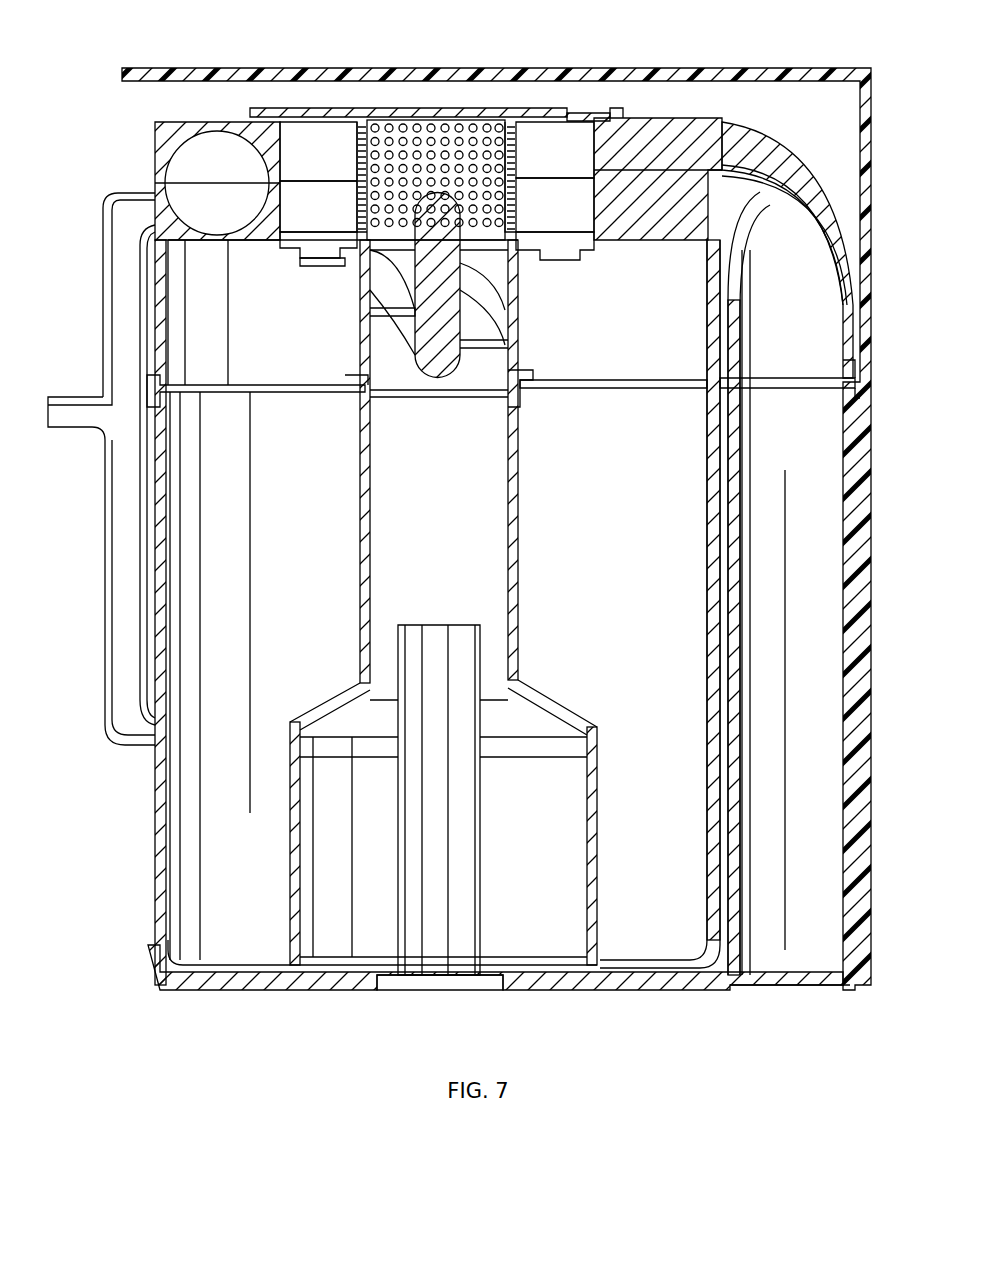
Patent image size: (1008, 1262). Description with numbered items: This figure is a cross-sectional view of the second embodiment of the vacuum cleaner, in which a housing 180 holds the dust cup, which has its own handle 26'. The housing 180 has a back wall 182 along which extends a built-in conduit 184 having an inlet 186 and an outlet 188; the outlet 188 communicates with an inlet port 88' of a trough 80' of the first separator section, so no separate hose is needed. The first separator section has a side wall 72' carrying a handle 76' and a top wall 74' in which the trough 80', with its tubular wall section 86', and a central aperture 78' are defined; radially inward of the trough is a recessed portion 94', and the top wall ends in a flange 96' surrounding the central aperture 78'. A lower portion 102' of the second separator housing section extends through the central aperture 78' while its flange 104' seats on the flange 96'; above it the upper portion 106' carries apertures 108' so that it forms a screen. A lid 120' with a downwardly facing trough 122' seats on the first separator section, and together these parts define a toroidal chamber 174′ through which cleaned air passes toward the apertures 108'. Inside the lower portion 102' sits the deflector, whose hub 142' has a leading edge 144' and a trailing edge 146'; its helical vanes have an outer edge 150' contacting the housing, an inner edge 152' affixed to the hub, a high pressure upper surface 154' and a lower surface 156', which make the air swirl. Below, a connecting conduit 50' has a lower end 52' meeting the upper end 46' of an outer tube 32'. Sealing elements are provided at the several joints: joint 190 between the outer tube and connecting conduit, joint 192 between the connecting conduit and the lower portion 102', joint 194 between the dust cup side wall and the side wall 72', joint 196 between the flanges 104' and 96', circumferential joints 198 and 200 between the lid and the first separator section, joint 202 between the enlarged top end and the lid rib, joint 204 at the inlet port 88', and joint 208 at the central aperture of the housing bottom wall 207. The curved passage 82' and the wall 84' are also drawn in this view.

The toroidal chamber 174′ is at (545, 112).
The joint 202 is at (617, 110).
The lid 120′ is at (150, 120).
The trough 122′ is at (180, 150).
The joint 198 is at (165, 183).
The apertures 108′ is at (362, 147).
The joint 200 is at (280, 170).
The upper portion 106′ is at (518, 157).
The curved conduit 82′ is at (760, 200).
The handle 76′ is at (101, 262).
The trough 80′ is at (245, 235).
The flange 104′ is at (345, 238).
The leading edge 144′ is at (500, 190).
The side wall 72′ is at (155, 293).
The top wall 74′ is at (190, 243).
The joint 196 is at (305, 262).
The central aperture 78′ is at (345, 258).
The flange 96′ is at (550, 250).
The recessed portion 94′ is at (592, 232).
The hub 142' is at (470, 276).
The outer edge 150' is at (343, 295).
The upper surface 154' is at (521, 304).
The lower surface 156' is at (343, 330).
The lower portion 102' is at (545, 354).
The wall 84' is at (660, 604).
The tubular wall section 86' is at (786, 583).
The joint 194 is at (175, 392).
The trailing edge 146' is at (420, 314).
The inner edge 152' is at (439, 391).
The joint 192 is at (522, 395).
The inlet port 88' is at (616, 407).
The outlet 188 is at (805, 388).
The joint 204 is at (840, 388).
The handle 26' is at (101, 571).
The connecting conduit 50' is at (484, 461).
The back wall 182 is at (855, 508).
The lower end 52' is at (558, 683).
The housing 180 is at (848, 706).
The conduit 184 is at (765, 740).
The joint 190 is at (290, 752).
The upper end 46' is at (618, 846).
The outer tube 32' is at (469, 832).
The bottom wall 207 is at (255, 990).
The joint 208 is at (450, 990).
The inlet 186 is at (775, 975).